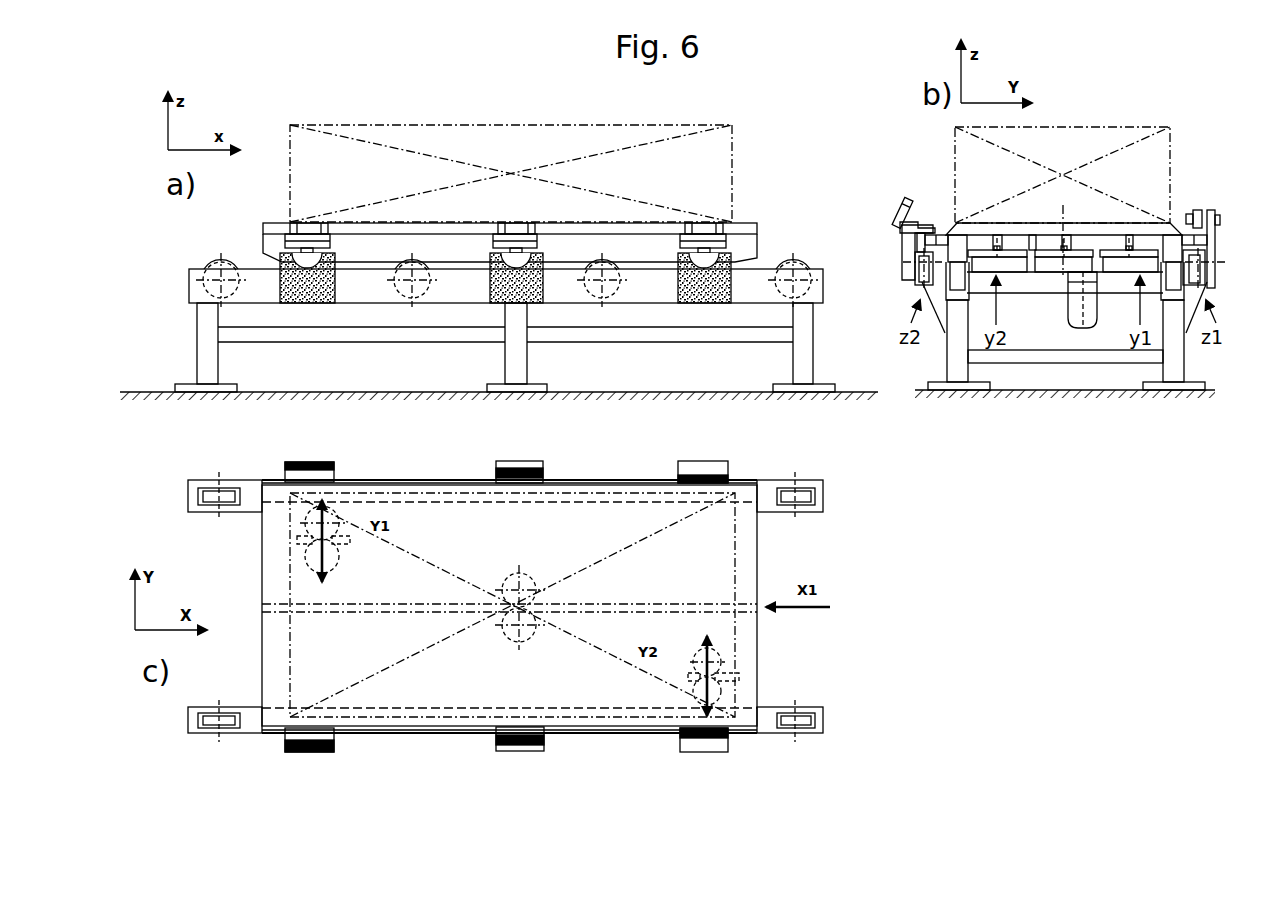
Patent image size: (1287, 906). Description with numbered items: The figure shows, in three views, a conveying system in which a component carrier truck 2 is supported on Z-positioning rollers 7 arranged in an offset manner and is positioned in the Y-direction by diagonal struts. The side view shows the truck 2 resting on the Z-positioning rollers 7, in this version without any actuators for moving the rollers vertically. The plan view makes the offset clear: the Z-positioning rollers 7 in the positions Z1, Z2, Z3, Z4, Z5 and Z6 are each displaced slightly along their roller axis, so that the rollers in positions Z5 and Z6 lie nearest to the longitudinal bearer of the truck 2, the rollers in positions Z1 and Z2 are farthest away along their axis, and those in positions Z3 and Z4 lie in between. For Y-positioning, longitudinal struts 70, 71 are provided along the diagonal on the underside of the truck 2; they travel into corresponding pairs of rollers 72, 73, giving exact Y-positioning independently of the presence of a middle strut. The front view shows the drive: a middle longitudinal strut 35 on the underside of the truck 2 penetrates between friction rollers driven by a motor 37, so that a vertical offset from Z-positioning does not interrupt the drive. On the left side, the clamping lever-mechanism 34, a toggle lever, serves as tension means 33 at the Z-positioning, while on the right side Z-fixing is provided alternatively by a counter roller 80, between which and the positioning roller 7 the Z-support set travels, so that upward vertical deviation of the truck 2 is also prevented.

In FIG. 6a, the component carrier truck 2 is at (744, 223).
In FIG. 6b, the component carrier truck 2 is at (1173, 223).
In FIG. 6c, the component carrier truck 2 is at (758, 645).
In FIG. 6a, the Z-positioning rollers 7 is at (720, 273).
In FIG. 6b, the Z-positioning rollers 7 is at (916, 284).
In FIG. 6b, the tension means 33 is at (896, 250).
In FIG. 6b, the clamping lever-mechanism 34 is at (895, 196).
In FIG. 6b, the longitudinal strut 35 is at (1066, 252).
In FIG. 6b, the motor 37 is at (1097, 305).
In FIG. 6b, the counter roller 80 is at (1196, 213).
In FIG. 6c, the longitudinal strut 70 is at (335, 543).
In FIG. 6c, the longitudinal strut 71 is at (697, 677).
In FIG. 6c, the pair of rollers 72 is at (332, 561).
In FIG. 6c, the pair of rollers 73 is at (697, 656).
In FIG. 6c, the position Z1 is at (333, 463).
In FIG. 6c, the position Z2 is at (333, 750).
In FIG. 6c, the position Z3 is at (540, 463).
In FIG. 6c, the position Z4 is at (528, 745).
In FIG. 6c, the position Z5 is at (712, 471).
In FIG. 6c, the position Z6 is at (718, 737).